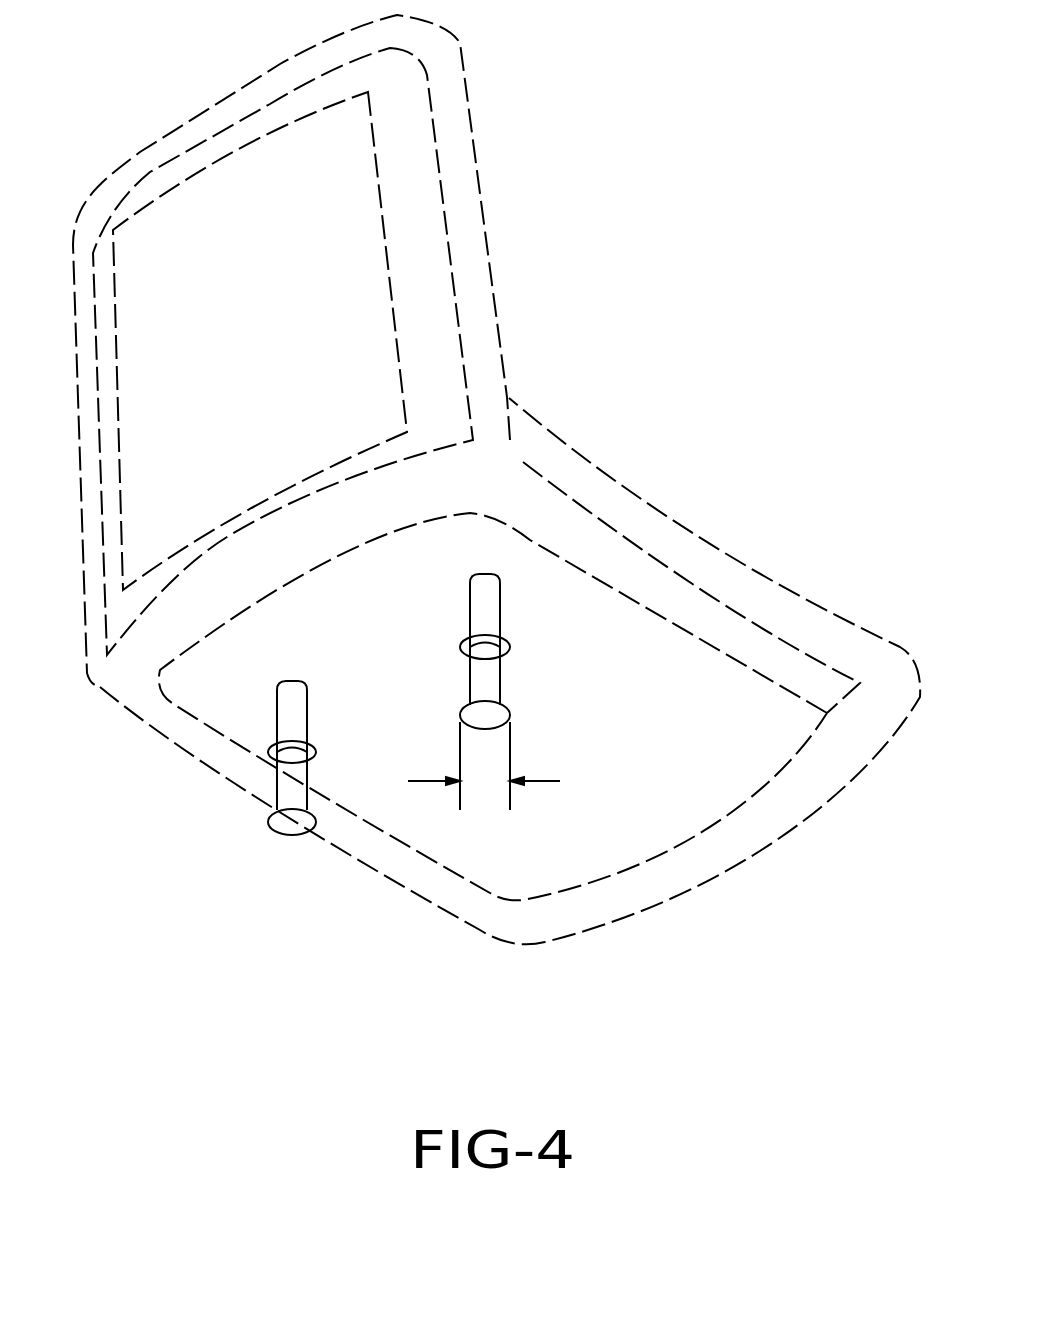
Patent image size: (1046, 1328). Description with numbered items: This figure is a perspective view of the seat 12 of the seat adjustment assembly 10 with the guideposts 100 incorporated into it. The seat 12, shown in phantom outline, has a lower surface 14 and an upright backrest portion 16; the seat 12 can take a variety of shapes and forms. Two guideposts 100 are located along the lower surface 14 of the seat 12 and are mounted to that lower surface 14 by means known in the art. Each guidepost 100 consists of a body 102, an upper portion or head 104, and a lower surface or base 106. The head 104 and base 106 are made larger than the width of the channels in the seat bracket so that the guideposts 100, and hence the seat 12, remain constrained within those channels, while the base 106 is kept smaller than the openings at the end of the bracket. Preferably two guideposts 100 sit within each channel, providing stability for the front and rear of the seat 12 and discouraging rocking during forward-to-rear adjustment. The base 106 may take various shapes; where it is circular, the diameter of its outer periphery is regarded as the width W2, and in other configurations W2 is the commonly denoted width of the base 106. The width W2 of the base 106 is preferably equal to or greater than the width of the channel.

The seat adjustment assembly 10 is at (632, 212).
The seat 12 is at (507, 398).
The lower surface 14 is at (697, 877).
The upright backrest portion 16 is at (333, 133).
The guidepost 100 is at (285, 697).
The body 102 is at (482, 670).
The head 104 is at (298, 780).
The base 106 is at (460, 713).
The width of the base W2 is at (505, 766).